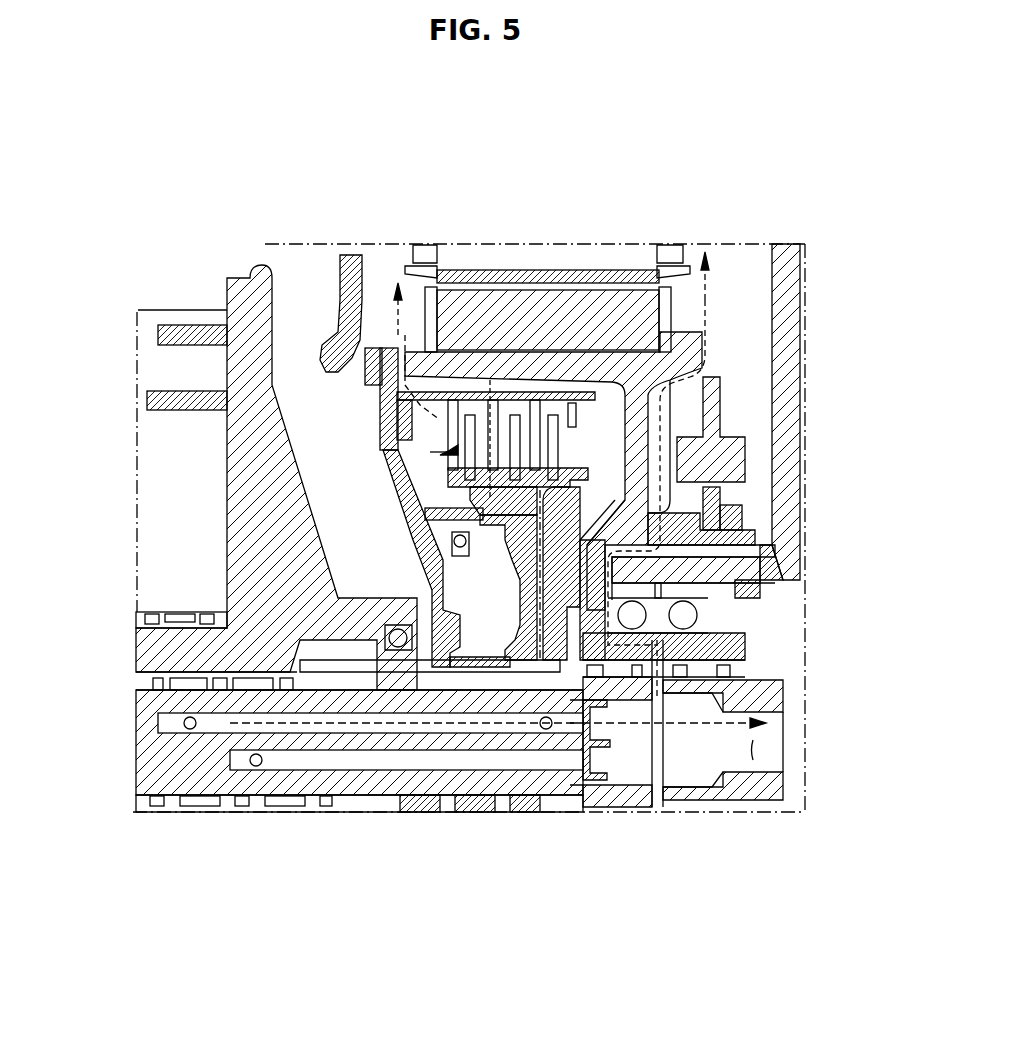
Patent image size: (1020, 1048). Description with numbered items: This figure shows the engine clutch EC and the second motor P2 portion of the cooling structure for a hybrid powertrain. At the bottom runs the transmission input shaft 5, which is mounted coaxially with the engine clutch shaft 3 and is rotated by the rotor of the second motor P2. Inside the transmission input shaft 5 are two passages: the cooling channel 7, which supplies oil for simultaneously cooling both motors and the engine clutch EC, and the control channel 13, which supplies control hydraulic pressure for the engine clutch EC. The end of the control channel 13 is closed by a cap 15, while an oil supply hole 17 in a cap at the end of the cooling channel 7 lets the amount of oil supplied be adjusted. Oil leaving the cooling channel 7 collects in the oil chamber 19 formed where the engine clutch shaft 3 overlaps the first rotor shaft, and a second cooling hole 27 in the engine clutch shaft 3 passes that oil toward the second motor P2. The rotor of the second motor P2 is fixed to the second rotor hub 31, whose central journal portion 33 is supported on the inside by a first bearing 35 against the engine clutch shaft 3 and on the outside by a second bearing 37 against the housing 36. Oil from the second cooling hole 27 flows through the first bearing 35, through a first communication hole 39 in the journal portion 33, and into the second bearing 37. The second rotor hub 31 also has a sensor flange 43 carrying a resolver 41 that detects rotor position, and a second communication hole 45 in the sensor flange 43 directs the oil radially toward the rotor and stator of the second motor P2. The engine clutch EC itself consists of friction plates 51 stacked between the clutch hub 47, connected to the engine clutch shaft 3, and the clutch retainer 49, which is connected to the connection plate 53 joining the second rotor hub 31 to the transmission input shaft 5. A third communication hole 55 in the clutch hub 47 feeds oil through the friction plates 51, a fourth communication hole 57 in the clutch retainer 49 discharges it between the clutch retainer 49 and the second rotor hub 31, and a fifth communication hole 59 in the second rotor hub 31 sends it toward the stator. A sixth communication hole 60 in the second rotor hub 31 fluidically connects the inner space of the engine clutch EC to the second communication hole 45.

The engine clutch shaft 3 is at (735, 792).
The transmission input shaft 5 is at (190, 800).
The cooling channel 7 is at (300, 740).
The control channel 13 is at (375, 755).
The cap 15 is at (600, 780).
The oil supply hole 17 is at (595, 730).
The oil chamber 19 is at (760, 745).
The second cooling hole 27 is at (655, 790).
The second rotor hub 31 is at (600, 360).
The journal portion 33 is at (720, 645).
The first bearing 35 is at (610, 664).
The housing 36 is at (795, 292).
The second bearing 37 is at (700, 612).
The first communication hole 39 is at (660, 690).
The resolver 41 is at (712, 495).
The sensor flange 43 is at (700, 540).
The second communication hole 45 is at (640, 568).
The clutch hub 47 is at (650, 465).
The clutch retainer 49 is at (395, 405).
The friction plates 51 is at (440, 440).
The connection plate 53 is at (190, 690).
The third communication hole 55 is at (435, 525).
The fourth communication hole 57 is at (478, 395).
The fifth communication hole 59 is at (400, 390).
The sixth communication hole 60 is at (640, 410).
The second motor P2 is at (470, 290).
The engine clutch EC is at (545, 420).